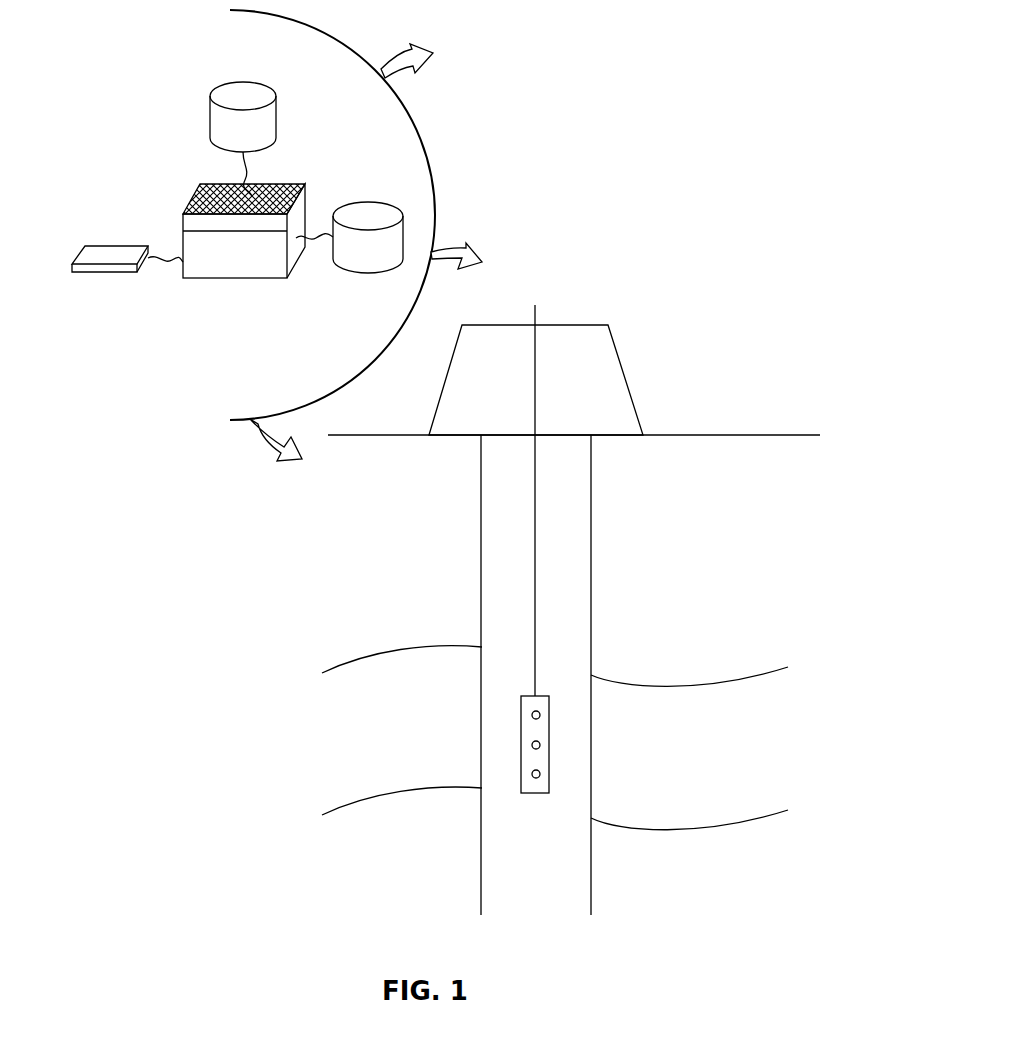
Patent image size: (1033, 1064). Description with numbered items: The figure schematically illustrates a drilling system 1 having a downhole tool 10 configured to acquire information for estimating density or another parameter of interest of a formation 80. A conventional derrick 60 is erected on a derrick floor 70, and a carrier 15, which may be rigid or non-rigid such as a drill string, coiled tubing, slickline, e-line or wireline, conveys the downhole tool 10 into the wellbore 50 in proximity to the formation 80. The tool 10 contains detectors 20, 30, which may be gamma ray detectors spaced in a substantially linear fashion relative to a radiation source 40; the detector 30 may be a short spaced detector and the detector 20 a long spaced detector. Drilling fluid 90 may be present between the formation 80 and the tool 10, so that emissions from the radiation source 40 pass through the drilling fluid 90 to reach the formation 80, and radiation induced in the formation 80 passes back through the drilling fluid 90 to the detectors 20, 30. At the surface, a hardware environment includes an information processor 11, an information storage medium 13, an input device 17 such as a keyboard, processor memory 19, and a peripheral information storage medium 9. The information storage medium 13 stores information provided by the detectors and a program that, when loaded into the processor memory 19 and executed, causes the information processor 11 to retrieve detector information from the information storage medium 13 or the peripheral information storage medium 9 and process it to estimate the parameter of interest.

The drilling system 1 is at (662, 247).
The peripheral information storage medium 9 is at (350, 275).
The downhole tool 10 is at (519, 703).
The information processor 11 is at (220, 240).
The information storage medium 13 is at (208, 117).
The carrier 15 is at (535, 593).
The input device 17 is at (122, 276).
The processor memory 19 is at (192, 202).
The detector 20 is at (541, 715).
The detector 30 is at (541, 745).
The radiation source 40 is at (541, 774).
The wellbore 50 is at (590, 485).
The derrick 60 is at (627, 380).
The derrick floor 70 is at (620, 436).
The formation 80 is at (674, 702).
The drilling fluid 90 is at (497, 782).